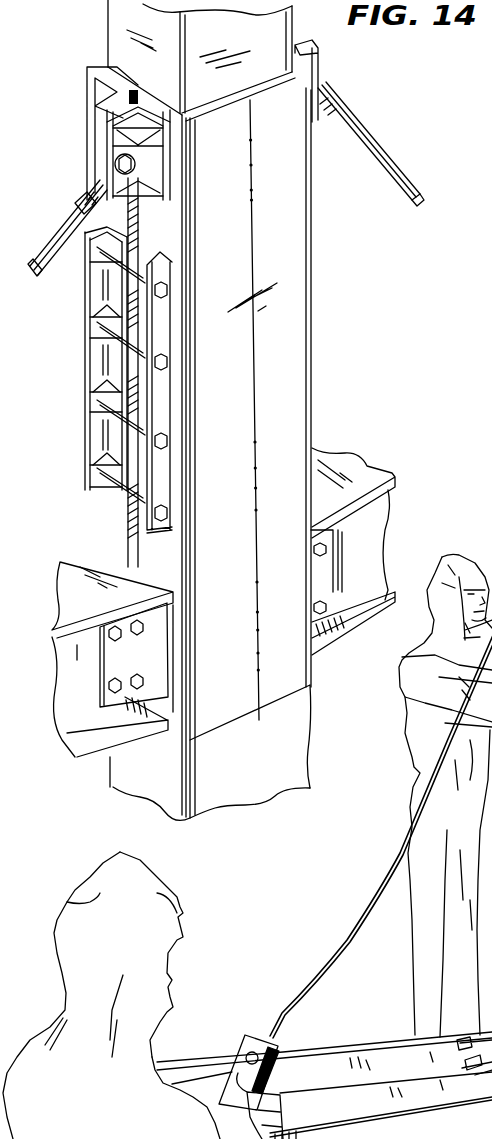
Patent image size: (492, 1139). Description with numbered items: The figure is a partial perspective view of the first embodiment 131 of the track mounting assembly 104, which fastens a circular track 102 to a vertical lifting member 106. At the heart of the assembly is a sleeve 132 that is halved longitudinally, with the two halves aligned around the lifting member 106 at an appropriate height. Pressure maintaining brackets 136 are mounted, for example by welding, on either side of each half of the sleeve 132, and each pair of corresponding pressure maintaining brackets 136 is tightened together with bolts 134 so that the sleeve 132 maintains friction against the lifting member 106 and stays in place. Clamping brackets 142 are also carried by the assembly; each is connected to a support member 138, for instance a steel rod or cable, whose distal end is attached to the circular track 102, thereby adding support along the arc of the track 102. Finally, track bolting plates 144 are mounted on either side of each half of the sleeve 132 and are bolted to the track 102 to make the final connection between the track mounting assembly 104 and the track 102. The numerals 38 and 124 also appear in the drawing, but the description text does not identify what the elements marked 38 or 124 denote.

The panel 38 is at (333, 1085).
The circular track 102 is at (363, 470).
The track mounting assembly 104 is at (323, 325).
The lifting member 106 is at (250, 40).
The hinge connector 124 is at (457, 1050).
The first embodiment 131 is at (292, 255).
The sleeve 132 is at (293, 425).
The bolts 134 is at (153, 518).
The pressure maintaining brackets 136 is at (157, 382).
The support members 138 is at (375, 162).
The clamping brackets 142 is at (120, 133).
The track bolting plates 144 is at (327, 572).